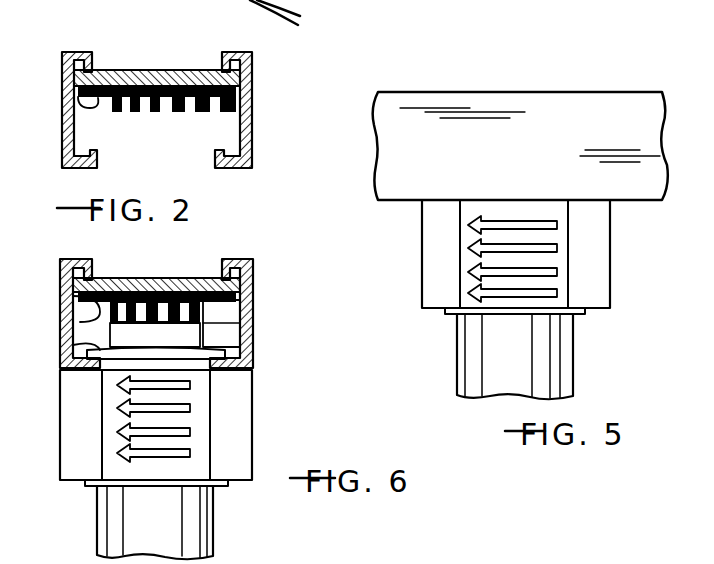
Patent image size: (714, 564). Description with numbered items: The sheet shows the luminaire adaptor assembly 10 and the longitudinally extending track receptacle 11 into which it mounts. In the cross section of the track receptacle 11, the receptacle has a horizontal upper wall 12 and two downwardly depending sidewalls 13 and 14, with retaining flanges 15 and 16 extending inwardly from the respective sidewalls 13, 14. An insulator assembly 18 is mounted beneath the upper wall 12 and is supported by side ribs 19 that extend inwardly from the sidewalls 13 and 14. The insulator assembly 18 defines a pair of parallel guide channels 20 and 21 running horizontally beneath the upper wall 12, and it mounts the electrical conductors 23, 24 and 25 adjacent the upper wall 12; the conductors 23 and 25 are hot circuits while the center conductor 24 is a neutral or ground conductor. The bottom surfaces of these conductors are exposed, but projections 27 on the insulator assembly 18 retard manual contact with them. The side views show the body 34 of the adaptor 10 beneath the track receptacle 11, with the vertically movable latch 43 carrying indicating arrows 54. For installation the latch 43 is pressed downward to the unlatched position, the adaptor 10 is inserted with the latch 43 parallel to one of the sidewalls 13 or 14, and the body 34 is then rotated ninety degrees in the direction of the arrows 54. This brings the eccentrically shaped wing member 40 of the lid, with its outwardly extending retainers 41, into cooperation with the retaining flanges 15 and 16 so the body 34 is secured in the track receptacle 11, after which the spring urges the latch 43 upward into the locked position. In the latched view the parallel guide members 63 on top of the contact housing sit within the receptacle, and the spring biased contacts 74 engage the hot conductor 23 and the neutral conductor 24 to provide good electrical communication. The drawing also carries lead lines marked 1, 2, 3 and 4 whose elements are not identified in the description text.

In FIG. 6, the connector assembly 1 is at (65, 358).
In FIG. 6, the housing top 2 is at (97, 259).
In FIG. 2, the housing side wall 3 is at (62, 117).
In FIG. 6, the housing side wall 3 is at (67, 318).
In FIG. 2, the housing side wall lower portion 4 is at (62, 138).
In FIG. 6, the luminaire adaptor assembly 10 is at (167, 393).
In FIG. 5, the luminaire adaptor assembly 10 is at (525, 226).
In FIG. 2, the track receptacle 11 is at (170, 98).
In FIG. 5, the track receptacle 11 is at (520, 127).
In FIG. 2, the horizontal upper wall 12 is at (143, 70).
In FIG. 2, the sidewall 13 is at (253, 86).
In FIG. 6, the sidewall 14 is at (253, 298).
In FIG. 5, the sidewall 14 is at (440, 168).
In FIG. 2, the retaining flange 15 is at (97, 152).
In FIG. 6, the retaining flange 15 is at (80, 372).
In FIG. 2, the retaining flange 16 is at (210, 158).
In FIG. 6, the retaining flange 16 is at (224, 372).
In FIG. 2, the insulator assembly 18 is at (97, 72).
In FIG. 2, the side ribs 19 is at (213, 70).
In FIG. 6, the side ribs 19 is at (245, 326).
In FIG. 2, the guide channel 20 is at (150, 107).
In FIG. 6, the guide channel 20 is at (133, 333).
In FIG. 2, the guide channel 21 is at (178, 108).
In FIG. 6, the guide channel 21 is at (185, 300).
In FIG. 2, the electrical conductor 23 is at (127, 110).
In FIG. 6, the electrical conductor 23 is at (133, 295).
In FIG. 2, the center conductor 24 is at (165, 110).
In FIG. 6, the center conductor 24 is at (107, 293).
In FIG. 2, the electrical conductor 25 is at (200, 105).
In FIG. 2, the projections 27 is at (115, 100).
In FIG. 6, the body 34 is at (253, 402).
In FIG. 5, the body 34 is at (612, 223).
In FIG. 6, the wing member 40 is at (180, 346).
In FIG. 6, the retainers 41 is at (240, 355).
In FIG. 6, the latch 43 is at (210, 455).
In FIG. 5, the latch 43 is at (573, 263).
In FIG. 6, the indicating arrows 54 is at (153, 462).
In FIG. 5, the indicating arrows 54 is at (520, 226).
In FIG. 6, the guide members 63 is at (156, 320).
In FIG. 6, the spring biased contacts 74 is at (180, 278).